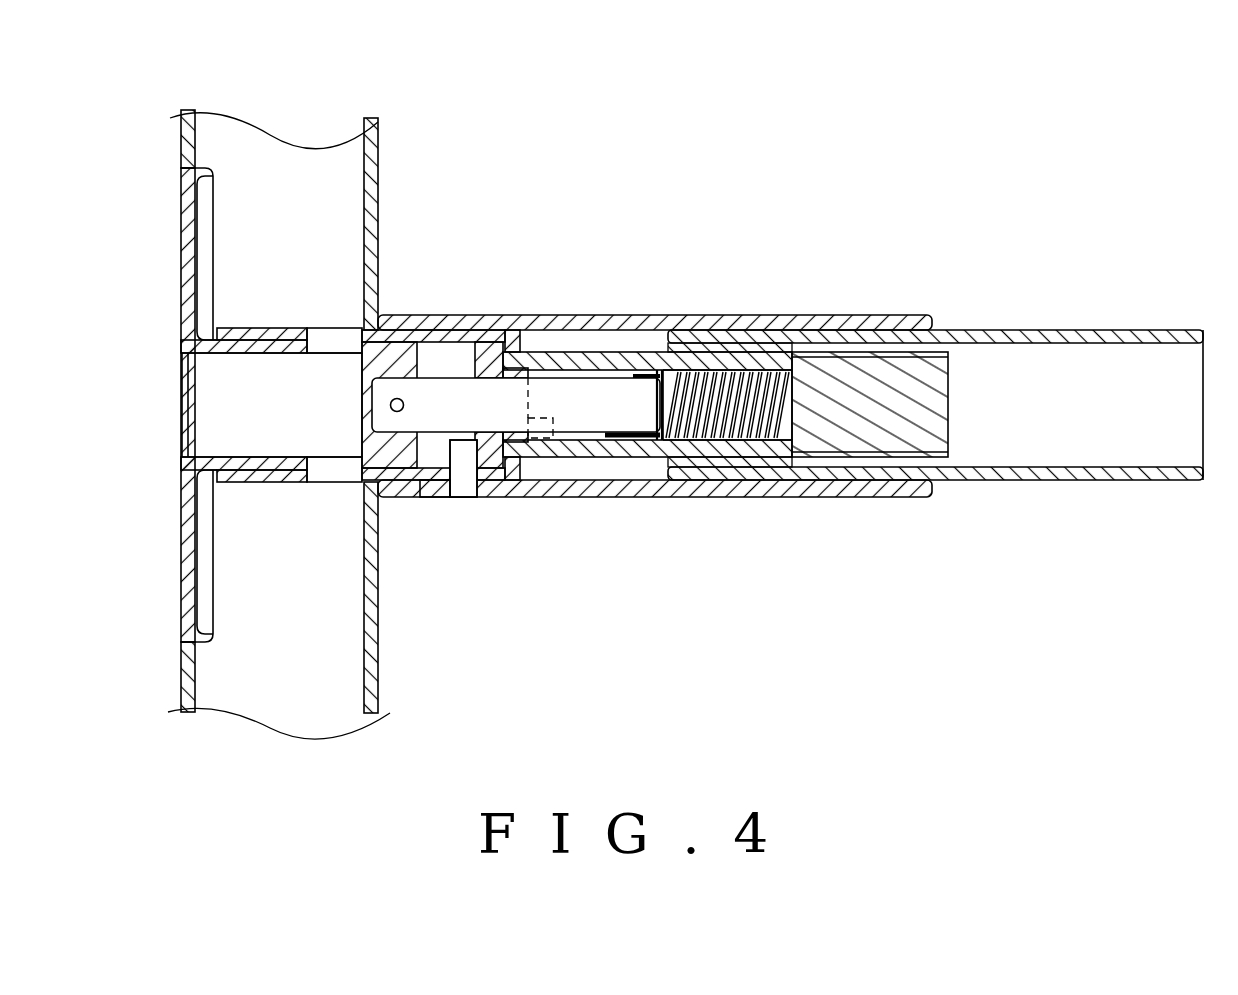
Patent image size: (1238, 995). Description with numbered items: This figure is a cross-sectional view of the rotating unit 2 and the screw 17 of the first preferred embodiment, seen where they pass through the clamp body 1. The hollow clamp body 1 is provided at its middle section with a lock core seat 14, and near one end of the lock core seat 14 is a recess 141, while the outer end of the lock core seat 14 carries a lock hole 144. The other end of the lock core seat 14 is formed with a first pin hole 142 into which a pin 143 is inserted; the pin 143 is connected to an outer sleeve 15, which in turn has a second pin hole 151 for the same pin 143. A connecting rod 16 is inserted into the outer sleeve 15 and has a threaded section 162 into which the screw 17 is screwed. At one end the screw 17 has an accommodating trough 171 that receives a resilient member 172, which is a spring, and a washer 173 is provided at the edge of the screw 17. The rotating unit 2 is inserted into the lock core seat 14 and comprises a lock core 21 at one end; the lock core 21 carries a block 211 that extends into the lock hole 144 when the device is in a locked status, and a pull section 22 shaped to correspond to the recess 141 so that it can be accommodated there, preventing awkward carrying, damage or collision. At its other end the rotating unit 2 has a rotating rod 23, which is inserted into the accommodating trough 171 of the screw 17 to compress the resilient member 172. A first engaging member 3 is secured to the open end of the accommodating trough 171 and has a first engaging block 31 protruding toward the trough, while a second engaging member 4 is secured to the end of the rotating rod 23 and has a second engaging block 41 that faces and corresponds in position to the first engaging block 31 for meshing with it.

The clamp body 1 is at (378, 122).
The rotating unit 2 is at (410, 352).
The first engaging member 3 is at (490, 350).
The second engaging member 4 is at (670, 438).
The lock core seat 14 is at (410, 333).
The outer sleeve 15 is at (922, 316).
The connecting rod 16 is at (1125, 333).
The screw 17 is at (928, 407).
The lock core 21 is at (210, 397).
The pull section 22 is at (190, 250).
The rotating rod 23 is at (613, 385).
The first engaging block 31 is at (545, 440).
The second engaging block 41 is at (618, 437).
The recess 141 is at (190, 165).
The first pin hole 142 is at (480, 478).
The pin 143 is at (462, 480).
The lock hole 144 is at (302, 327).
The second pin hole 151 is at (443, 488).
The threaded section 162 is at (730, 462).
The accommodating trough 171 is at (745, 368).
The resilient member 172 is at (767, 368).
The washer 173 is at (513, 340).
The block 211 is at (335, 338).